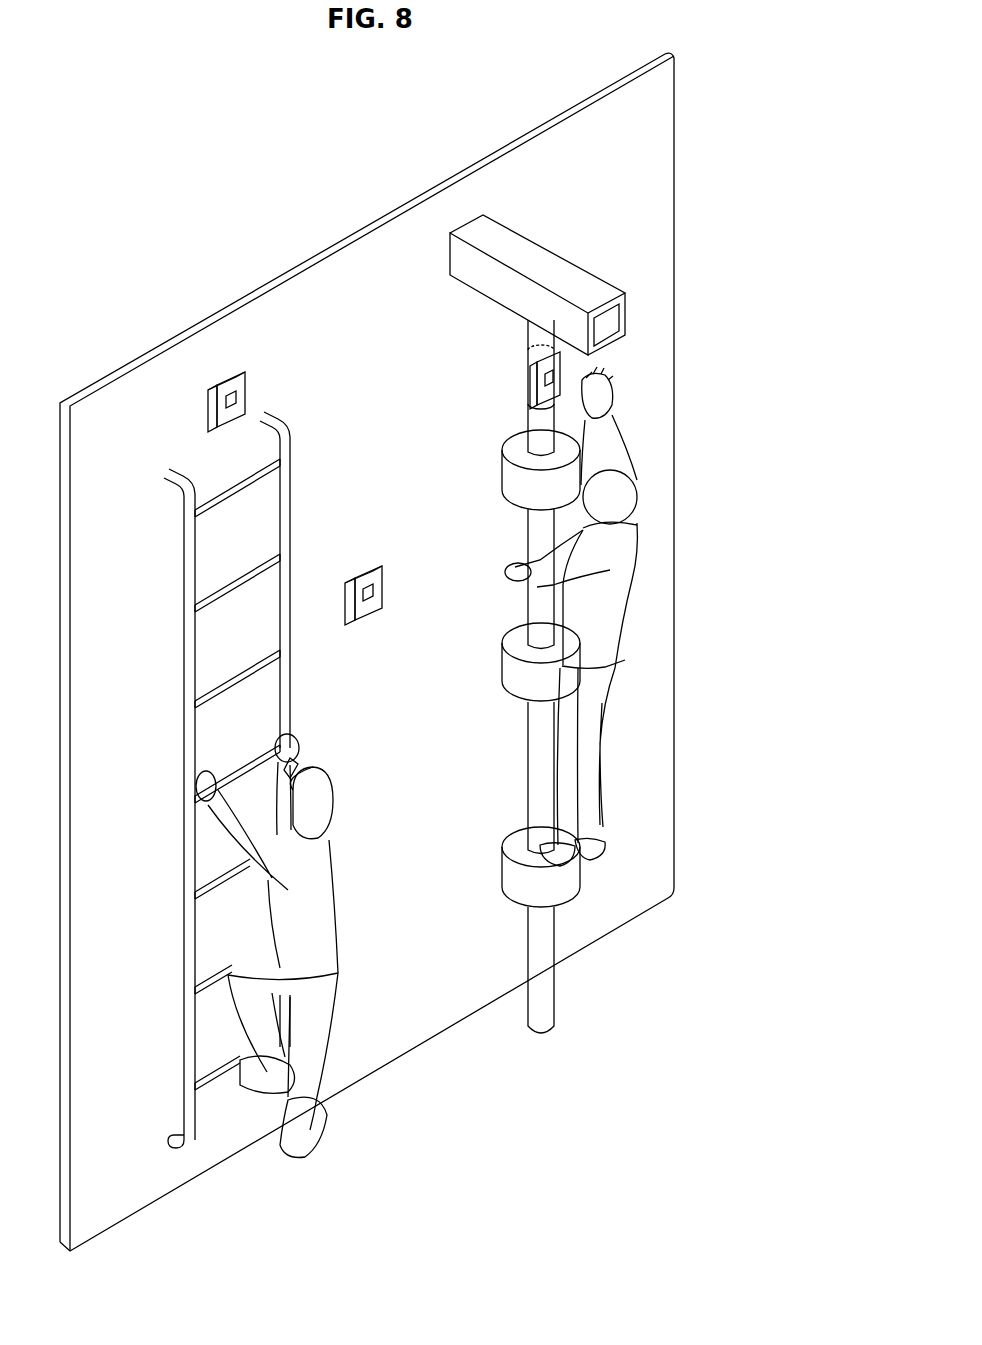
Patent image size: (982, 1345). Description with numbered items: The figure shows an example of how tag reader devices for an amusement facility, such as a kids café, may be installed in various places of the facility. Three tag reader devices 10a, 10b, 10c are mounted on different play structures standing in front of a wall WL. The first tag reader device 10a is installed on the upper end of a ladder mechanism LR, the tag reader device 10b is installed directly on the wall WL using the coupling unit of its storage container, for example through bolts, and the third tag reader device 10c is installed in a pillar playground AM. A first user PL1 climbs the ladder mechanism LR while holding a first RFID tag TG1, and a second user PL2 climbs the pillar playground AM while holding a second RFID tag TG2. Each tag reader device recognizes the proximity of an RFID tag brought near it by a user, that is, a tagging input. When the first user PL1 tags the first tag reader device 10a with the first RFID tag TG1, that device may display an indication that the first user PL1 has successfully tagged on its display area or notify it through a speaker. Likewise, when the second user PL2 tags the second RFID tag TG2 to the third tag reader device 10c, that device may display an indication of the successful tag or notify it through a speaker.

The first tag reader device 10a is at (248, 386).
The tag reader device 10b is at (384, 585).
The third tag reader device 10c is at (528, 379).
The wall WL is at (655, 214).
The ladder mechanism LR is at (184, 667).
The pillar playground AM is at (531, 755).
The first user PL1 is at (332, 920).
The second user PL2 is at (626, 558).
The first RFID tag TG1 is at (300, 754).
The second RFID tag TG2 is at (606, 398).